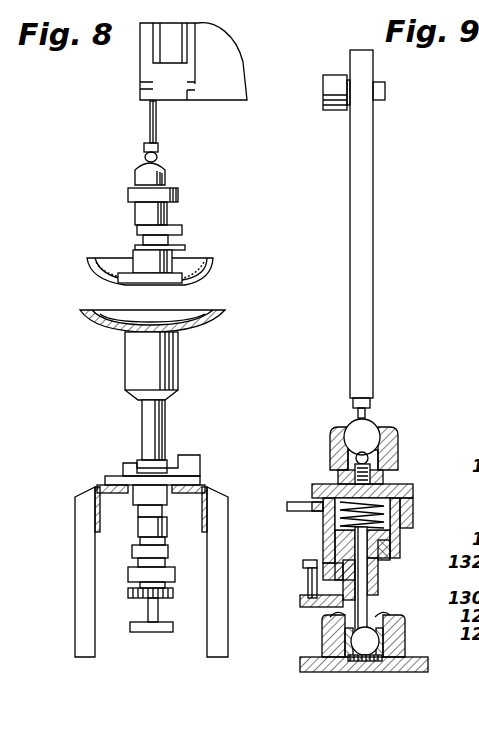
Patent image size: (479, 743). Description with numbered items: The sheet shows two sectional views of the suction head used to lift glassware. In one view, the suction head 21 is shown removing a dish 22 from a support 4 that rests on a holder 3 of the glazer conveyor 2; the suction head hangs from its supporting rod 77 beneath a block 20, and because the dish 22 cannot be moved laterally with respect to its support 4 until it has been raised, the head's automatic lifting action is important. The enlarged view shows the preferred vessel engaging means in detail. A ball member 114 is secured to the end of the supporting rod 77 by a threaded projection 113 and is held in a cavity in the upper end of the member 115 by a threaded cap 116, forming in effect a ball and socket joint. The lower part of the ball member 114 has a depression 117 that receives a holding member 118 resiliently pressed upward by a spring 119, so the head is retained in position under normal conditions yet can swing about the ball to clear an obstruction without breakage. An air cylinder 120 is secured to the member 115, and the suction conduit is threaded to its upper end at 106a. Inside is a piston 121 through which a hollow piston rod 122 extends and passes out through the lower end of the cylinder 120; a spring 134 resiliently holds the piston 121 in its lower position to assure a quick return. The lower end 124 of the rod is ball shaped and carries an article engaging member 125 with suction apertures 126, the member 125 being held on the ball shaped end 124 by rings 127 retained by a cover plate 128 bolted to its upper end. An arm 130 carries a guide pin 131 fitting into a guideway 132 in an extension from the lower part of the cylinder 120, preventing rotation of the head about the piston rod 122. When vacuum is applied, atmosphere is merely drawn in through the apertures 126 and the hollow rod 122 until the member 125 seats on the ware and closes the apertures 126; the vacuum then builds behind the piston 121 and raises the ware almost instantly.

In FIG. 8, the conveyor 2 is at (111, 469).
In FIG. 8, the holder 3 is at (141, 418).
In FIG. 8, the support 4 is at (91, 326).
In FIG. 8, the head block 20 is at (246, 32).
In FIG. 8, the suction head 21 is at (197, 246).
In FIG. 8, the dish 22 is at (213, 270).
In FIG. 8, the supporting rod 77 is at (149, 115).
In FIG. 9, the supporting rod 77 is at (350, 322).
In FIG. 9, the threaded connection of suction conduit 106a is at (302, 503).
In FIG. 9, the threaded projection 113 is at (356, 412).
In FIG. 9, the ball member 114 is at (346, 425).
In FIG. 9, the member 115 is at (392, 482).
In FIG. 9, the threaded cap 116 is at (388, 430).
In FIG. 9, the depression 117 is at (335, 448).
In FIG. 9, the holding member 118 is at (338, 476).
In FIG. 9, the spring 119 is at (392, 446).
In FIG. 9, the air cylinder 120 is at (398, 528).
In FIG. 9, the piston 121 is at (385, 542).
In FIG. 9, the hollow piston rod 122 is at (378, 592).
In FIG. 9, the ball shaped lower end 124 is at (372, 652).
In FIG. 9, the article engaging member 125 is at (305, 666).
In FIG. 9, the suction apertures 126 is at (364, 672).
In FIG. 9, the rings 127 is at (383, 648).
In FIG. 9, the cover plate 128 is at (397, 626).
In FIG. 9, the arm 130 is at (302, 601).
In FIG. 9, the guide pin 131 is at (306, 584).
In FIG. 9, the guideway 132 is at (310, 563).
In FIG. 9, the spring 134 is at (384, 508).